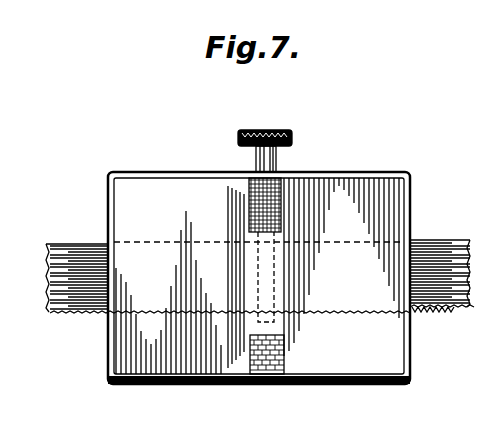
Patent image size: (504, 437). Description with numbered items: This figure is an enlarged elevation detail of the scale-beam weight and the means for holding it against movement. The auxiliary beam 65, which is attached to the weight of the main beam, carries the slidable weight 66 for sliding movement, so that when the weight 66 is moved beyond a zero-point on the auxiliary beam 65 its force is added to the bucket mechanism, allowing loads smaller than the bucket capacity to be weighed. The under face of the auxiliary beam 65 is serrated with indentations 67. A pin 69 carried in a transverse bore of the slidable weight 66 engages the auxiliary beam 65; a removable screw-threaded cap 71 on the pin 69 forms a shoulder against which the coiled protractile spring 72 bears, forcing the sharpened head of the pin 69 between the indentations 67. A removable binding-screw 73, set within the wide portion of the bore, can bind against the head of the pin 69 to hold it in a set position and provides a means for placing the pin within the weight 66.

The auxiliary beam 65 is at (433, 241).
The slidable weight 66 is at (356, 362).
The indentations 67 is at (448, 310).
The pin 69 is at (259, 290).
The cap 71 is at (279, 163).
The spring 72 is at (262, 214).
The binding-screw 73 is at (250, 363).